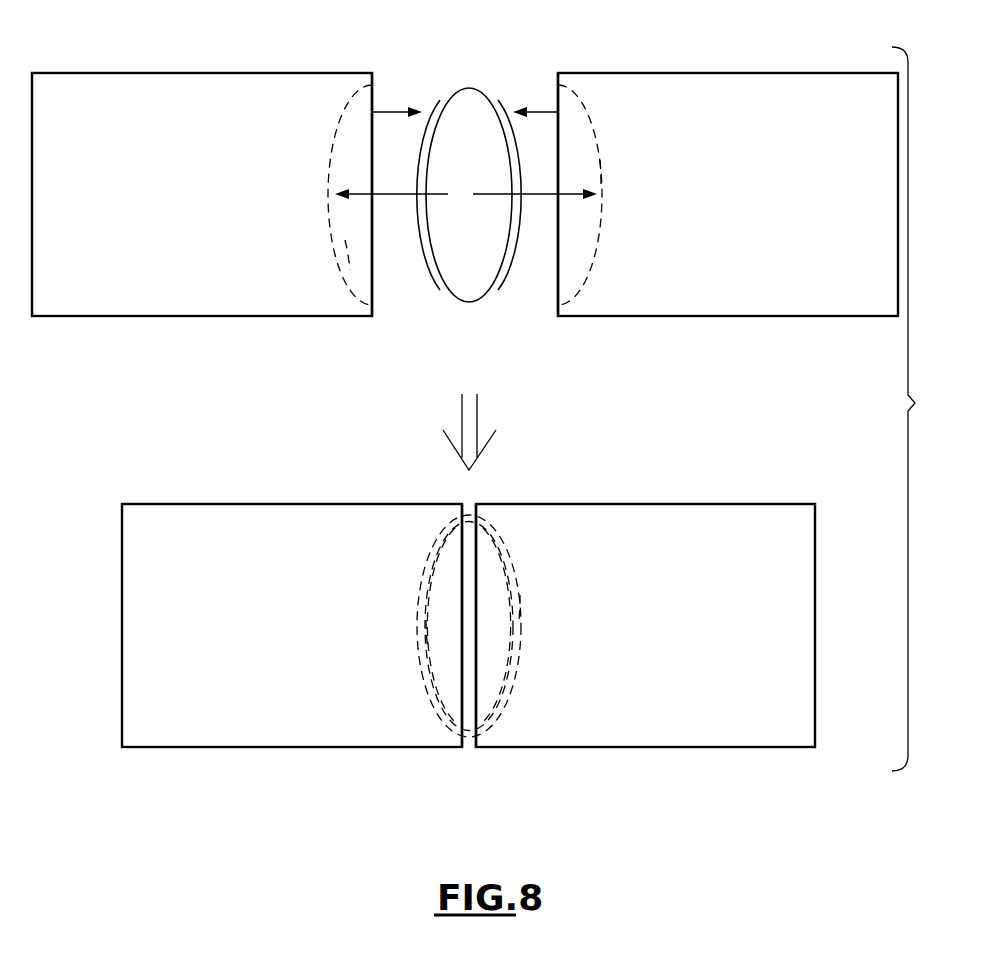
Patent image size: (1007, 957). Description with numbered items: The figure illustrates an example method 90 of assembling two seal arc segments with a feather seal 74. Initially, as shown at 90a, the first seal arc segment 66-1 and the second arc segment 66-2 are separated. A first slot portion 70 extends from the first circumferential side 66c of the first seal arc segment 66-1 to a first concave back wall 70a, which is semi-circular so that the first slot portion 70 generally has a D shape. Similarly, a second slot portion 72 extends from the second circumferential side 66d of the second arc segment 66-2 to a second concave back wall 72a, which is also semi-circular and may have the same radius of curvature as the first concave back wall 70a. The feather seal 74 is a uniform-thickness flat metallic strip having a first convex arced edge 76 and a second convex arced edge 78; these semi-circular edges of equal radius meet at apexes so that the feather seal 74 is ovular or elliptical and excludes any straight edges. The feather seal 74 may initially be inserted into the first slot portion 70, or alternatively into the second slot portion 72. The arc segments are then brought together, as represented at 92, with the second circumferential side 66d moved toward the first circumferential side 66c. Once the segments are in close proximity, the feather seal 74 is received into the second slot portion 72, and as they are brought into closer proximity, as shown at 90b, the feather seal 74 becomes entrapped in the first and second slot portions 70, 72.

The first seal arc segment 66-1 is at (227, 296).
The second arc segment 66-2 is at (724, 300).
The first circumferential side 66c is at (372, 86).
The second circumferential side 66d is at (558, 88).
The first slot portion 70 is at (368, 282).
The first concave back wall 70a is at (341, 255).
The second slot portion 72 is at (566, 284).
The second concave back wall 72a is at (602, 172).
The feather seal 74 is at (465, 292).
The first convex arced edge 76 is at (430, 152).
The second convex arced edge 78 is at (508, 158).
The method 90 is at (924, 409).
The initial separated state 90a is at (562, 42).
The closer-proximity state 90b is at (467, 757).
The bringing together 92 is at (395, 112).